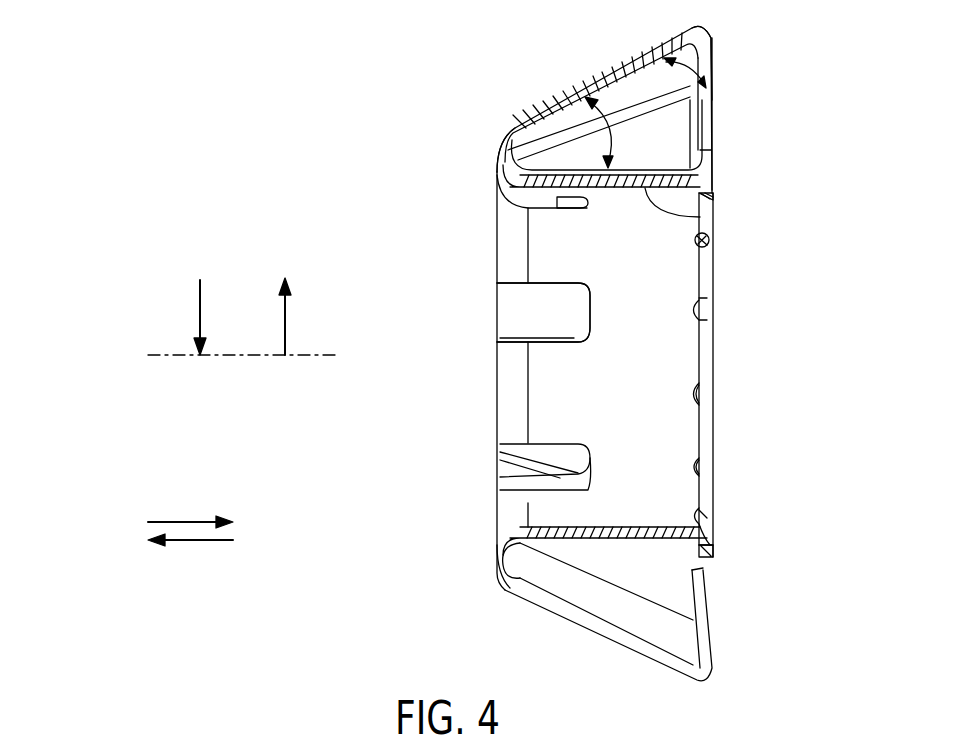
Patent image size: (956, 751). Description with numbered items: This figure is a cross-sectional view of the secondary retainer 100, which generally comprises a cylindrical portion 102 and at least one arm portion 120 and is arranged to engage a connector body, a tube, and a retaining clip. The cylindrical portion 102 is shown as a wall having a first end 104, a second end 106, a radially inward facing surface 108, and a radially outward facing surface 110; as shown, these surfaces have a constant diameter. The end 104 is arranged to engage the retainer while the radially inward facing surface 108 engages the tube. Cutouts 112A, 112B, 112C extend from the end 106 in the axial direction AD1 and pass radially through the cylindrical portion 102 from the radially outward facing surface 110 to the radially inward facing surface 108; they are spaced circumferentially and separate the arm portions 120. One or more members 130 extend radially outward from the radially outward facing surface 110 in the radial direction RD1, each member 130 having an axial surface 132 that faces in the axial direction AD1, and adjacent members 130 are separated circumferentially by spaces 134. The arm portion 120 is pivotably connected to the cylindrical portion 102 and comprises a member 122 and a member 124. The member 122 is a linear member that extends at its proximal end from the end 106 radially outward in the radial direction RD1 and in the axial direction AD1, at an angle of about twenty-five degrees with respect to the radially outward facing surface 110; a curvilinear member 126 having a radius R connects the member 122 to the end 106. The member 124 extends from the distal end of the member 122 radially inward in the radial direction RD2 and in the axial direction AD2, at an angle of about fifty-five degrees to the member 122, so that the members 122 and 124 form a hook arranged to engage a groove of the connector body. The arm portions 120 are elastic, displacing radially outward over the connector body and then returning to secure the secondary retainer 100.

The secondary retainer 100 is at (312, 137).
The cylindrical portion 102 is at (680, 342).
The end 104 is at (713, 272).
The end 106 is at (523, 238).
The radially inward facing surface 108 is at (700, 217).
The radially outward facing surface 110 is at (705, 135).
The cutout 112A is at (588, 456).
The cutout 112B is at (562, 301).
The cutout 112C is at (557, 200).
The arm portion 120 is at (567, 617).
The member 122 is at (550, 97).
The member 124 is at (710, 48).
The curvilinear member 126 is at (500, 140).
The member 130 is at (713, 556).
The axial surface 132 is at (713, 542).
The space 134 is at (718, 397).
The radius R is at (497, 565).
The radial direction RD1 is at (285, 318).
The radial direction RD2 is at (200, 316).
The axial direction AD1 is at (190, 522).
The axial direction AD2 is at (200, 540).